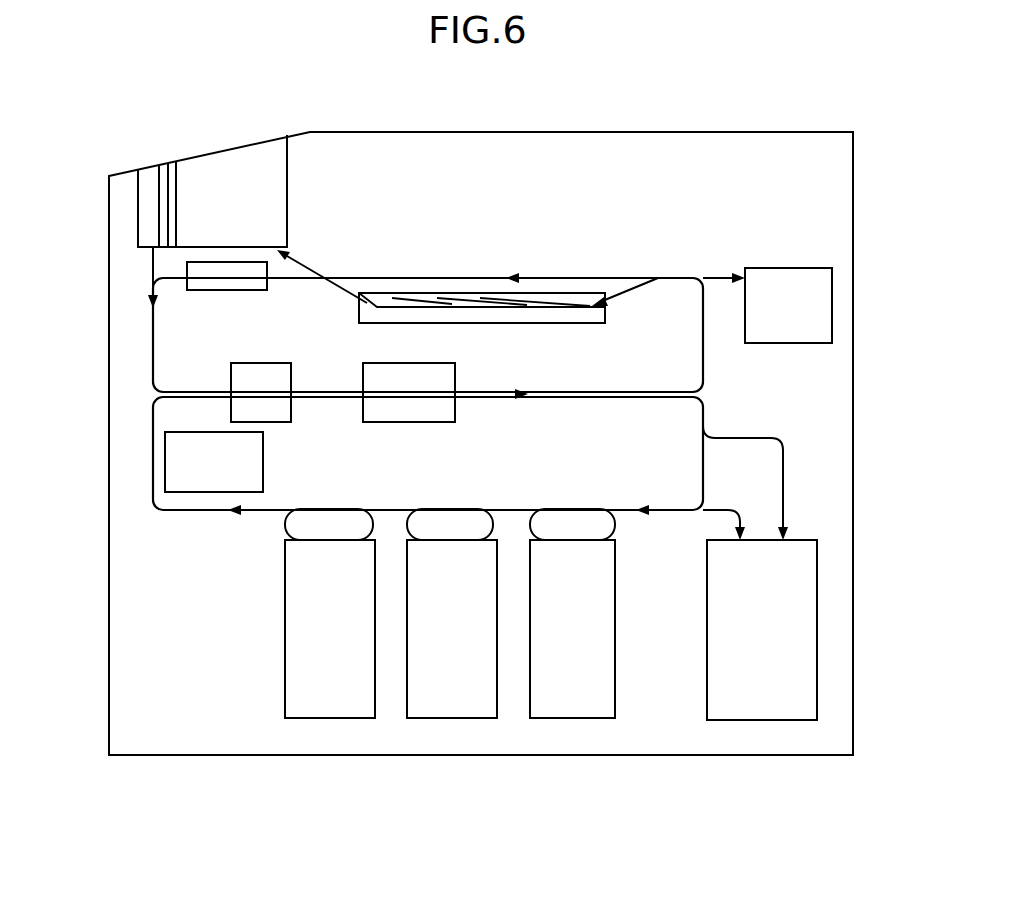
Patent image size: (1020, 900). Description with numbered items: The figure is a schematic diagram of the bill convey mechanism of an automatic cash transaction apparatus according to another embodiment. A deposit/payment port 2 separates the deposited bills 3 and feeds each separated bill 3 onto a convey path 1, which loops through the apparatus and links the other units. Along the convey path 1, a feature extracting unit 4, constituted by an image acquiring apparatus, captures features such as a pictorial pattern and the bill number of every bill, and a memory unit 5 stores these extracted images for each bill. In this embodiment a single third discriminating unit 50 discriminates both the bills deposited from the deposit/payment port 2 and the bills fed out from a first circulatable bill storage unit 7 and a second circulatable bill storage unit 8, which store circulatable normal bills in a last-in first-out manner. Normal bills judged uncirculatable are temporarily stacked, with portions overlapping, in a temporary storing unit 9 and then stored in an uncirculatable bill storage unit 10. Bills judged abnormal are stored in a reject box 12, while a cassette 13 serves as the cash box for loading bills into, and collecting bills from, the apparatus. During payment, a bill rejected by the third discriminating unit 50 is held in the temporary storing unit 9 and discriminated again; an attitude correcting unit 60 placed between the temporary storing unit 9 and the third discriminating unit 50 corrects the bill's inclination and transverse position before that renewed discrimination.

The convey path 1 is at (392, 278).
The deposit/payment port 2 is at (283, 167).
The deposited bills 3 is at (178, 178).
The feature extracting unit 4 is at (231, 402).
The memory unit 5 is at (165, 458).
The first circulatable bill storage unit 7 is at (448, 718).
The second circulatable bill storage unit 8 is at (572, 718).
The temporary storing unit 9 is at (567, 293).
The uncirculatable bill storage unit 10 is at (328, 718).
The reject box 12 is at (832, 278).
The cassette 13 is at (800, 578).
The third discriminating unit 50 is at (368, 412).
The attitude correcting unit 60 is at (213, 290).